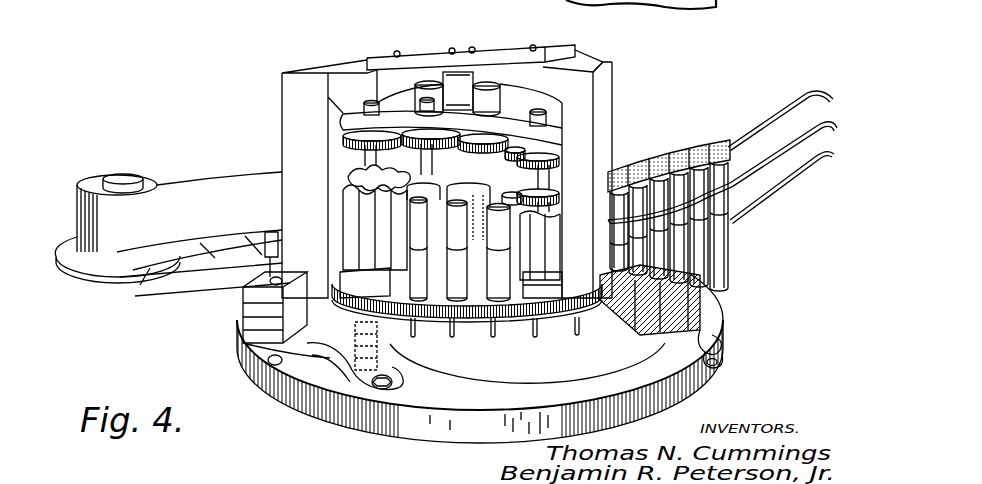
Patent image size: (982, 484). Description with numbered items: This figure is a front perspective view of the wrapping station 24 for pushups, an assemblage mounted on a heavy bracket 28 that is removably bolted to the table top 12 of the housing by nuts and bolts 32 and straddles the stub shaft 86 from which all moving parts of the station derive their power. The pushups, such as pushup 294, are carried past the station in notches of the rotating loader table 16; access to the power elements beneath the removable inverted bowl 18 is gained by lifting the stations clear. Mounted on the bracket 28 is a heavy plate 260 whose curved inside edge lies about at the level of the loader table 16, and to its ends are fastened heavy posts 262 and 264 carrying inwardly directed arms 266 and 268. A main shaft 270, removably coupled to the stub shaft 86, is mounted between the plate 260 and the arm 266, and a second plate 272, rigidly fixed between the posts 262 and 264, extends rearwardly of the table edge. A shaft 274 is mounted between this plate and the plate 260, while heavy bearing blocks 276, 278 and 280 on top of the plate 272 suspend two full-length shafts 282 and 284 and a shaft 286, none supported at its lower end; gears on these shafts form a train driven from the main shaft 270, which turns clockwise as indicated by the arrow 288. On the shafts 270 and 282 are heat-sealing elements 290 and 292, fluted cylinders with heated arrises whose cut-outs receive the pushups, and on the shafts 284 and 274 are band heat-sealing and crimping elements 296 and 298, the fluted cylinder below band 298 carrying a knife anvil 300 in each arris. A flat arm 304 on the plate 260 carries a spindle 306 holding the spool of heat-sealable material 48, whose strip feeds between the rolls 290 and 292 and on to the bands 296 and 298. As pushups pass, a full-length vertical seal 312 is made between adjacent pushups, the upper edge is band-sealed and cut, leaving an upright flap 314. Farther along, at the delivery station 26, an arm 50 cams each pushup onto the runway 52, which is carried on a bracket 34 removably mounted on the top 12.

The table top 12 is at (580, 382).
The loader table 16 is at (503, 323).
The removable inverted bowl 18 is at (660, 310).
The wrapping station 24 is at (618, 86).
The delivery station 26 is at (724, 206).
The bracket 28 is at (268, 333).
The nuts and bolts 32 is at (382, 390).
The bracket 34 is at (714, 342).
The spool of heat-sealable material 48 is at (80, 205).
The arm 50 is at (773, 127).
The runway 52 is at (780, 128).
The stub shaft 86 is at (417, 285).
The heavy plate 260 is at (243, 313).
The post 262 is at (285, 127).
The post 264 is at (606, 106).
The inwardly directed arm 266 is at (352, 63).
The inwardly directed arm 268 is at (580, 62).
The main shaft 270 is at (360, 178).
The second plate 272 is at (343, 112).
The shaft 274 is at (558, 205).
The bearing block 276 is at (428, 83).
The bearing block 278 is at (487, 84).
The bearing block 280 is at (536, 110).
The full-length shaft 282 is at (427, 153).
The full-length shaft 284 is at (548, 178).
The shaft 286 is at (548, 143).
The arrow 288 is at (345, 118).
The heat-sealing element 290 is at (347, 220).
The heat-sealing element 292 is at (385, 163).
The pushup 294 is at (477, 290).
The band heat-sealing and crimping element 296 is at (556, 163).
The band heat-sealing and crimping element 298 is at (558, 245).
The knife anvil 300 is at (550, 305).
The flat arm 304 is at (142, 277).
The spindle 306 is at (124, 174).
The full-length vertical seal 312 is at (482, 196).
The flap 314 is at (730, 140).